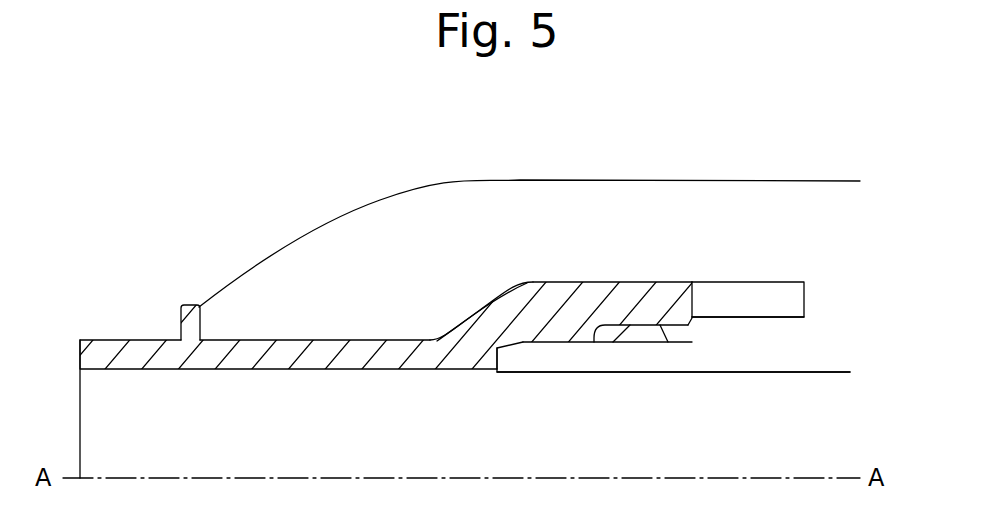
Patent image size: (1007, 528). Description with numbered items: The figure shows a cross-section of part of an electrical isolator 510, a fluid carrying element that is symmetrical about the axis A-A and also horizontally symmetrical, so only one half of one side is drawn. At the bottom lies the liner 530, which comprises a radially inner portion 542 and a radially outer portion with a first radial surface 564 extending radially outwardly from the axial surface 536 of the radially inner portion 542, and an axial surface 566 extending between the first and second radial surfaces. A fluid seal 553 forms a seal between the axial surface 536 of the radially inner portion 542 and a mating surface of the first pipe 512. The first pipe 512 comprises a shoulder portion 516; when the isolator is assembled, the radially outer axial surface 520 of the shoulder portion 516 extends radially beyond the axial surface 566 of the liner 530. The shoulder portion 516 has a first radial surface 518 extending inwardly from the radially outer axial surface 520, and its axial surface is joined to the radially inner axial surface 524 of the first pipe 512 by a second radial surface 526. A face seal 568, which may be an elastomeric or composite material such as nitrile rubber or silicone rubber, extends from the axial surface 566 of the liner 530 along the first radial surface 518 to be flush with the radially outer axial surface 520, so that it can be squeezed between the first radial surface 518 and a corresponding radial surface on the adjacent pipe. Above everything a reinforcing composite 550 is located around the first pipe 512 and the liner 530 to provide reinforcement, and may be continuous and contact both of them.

The electrical isolator 510 is at (245, 148).
The first pipe 512 is at (104, 341).
The shoulder portion 516 is at (548, 282).
The first radial surface 518 is at (693, 340).
The radially outer axial surface 520 is at (605, 283).
The radially inner axial surface 524 is at (267, 371).
The second radial surface 526 is at (497, 372).
The liner 530 is at (793, 350).
The axial surface 536 is at (535, 343).
The radially inner portion 542 is at (595, 357).
The reinforcing composite 550 is at (690, 235).
The fluid seal 553 is at (652, 338).
The first radial surface 564 is at (695, 330).
The axial surface 566 is at (788, 317).
The face seal 568 is at (805, 290).